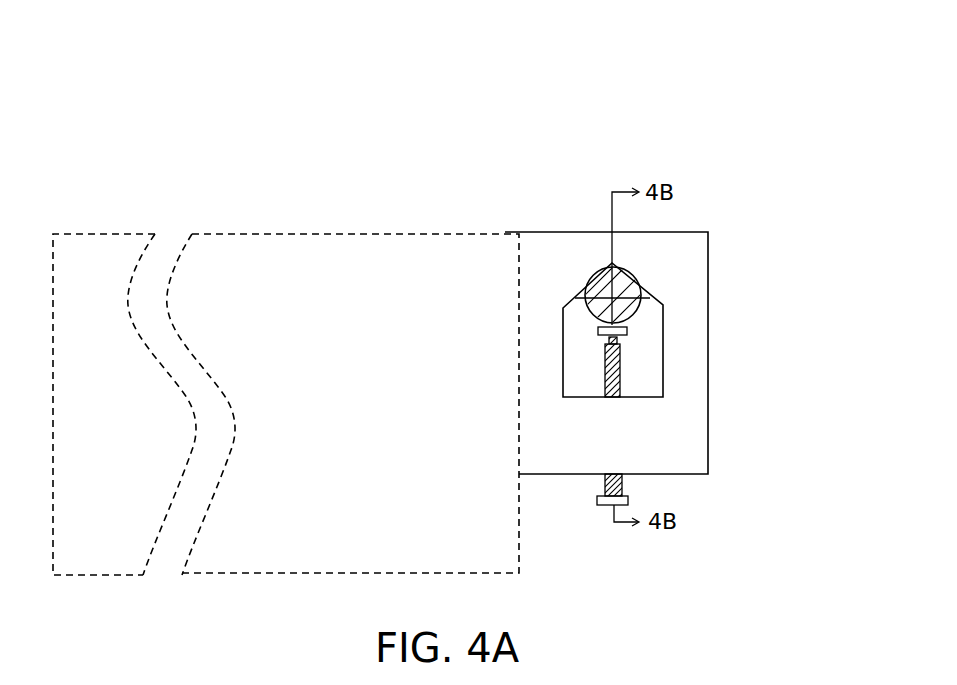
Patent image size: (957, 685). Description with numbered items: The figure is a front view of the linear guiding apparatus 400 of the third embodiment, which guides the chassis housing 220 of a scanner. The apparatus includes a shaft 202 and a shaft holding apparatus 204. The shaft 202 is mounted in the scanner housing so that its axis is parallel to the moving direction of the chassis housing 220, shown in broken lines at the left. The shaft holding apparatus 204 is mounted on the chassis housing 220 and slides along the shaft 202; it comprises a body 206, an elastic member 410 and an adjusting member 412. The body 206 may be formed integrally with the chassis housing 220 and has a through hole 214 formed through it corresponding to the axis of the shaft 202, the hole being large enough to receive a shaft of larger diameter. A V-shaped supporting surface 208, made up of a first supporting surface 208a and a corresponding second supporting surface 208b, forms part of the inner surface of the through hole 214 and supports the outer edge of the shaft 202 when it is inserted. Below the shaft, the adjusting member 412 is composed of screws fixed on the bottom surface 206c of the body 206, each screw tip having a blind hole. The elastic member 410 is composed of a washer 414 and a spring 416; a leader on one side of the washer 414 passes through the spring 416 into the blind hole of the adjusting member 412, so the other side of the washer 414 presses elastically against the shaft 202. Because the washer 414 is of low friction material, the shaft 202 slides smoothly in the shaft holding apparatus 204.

The linear guiding apparatus 400 is at (754, 36).
The chassis housing 220 is at (260, 234).
The shaft 202 is at (563, 310).
The shaft holding apparatus 204 is at (808, 307).
The body 206 is at (708, 423).
The bottom surface 206c is at (575, 474).
The V-shaped supporting surface 208 is at (639, 127).
The first supporting surface 208a is at (592, 283).
The second supporting surface 208b is at (638, 273).
The through hole 214 is at (648, 322).
The elastic member 410 is at (757, 305).
The washer 414 is at (627, 331).
The spring 416 is at (619, 341).
The adjusting member 412 is at (620, 381).